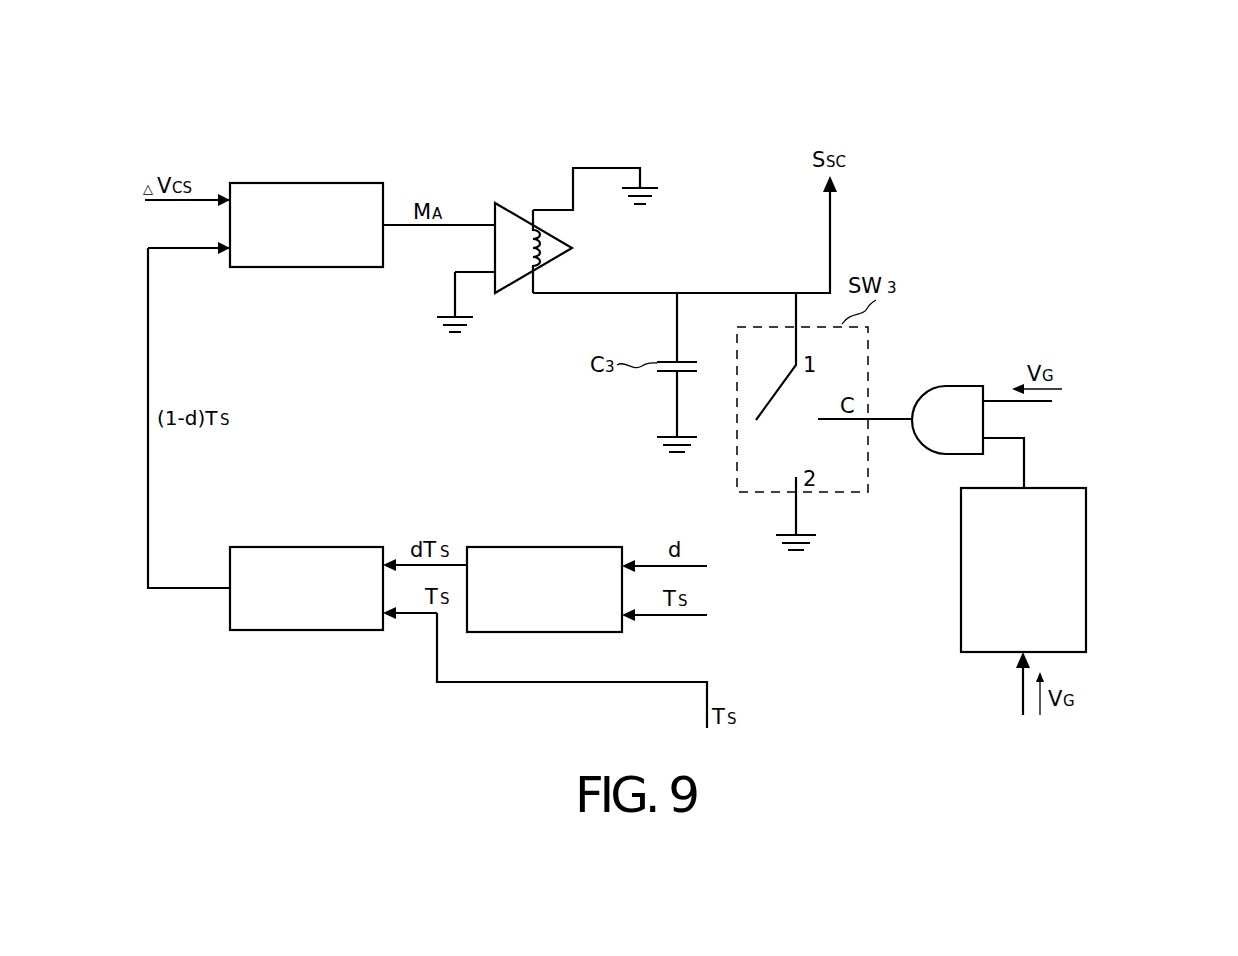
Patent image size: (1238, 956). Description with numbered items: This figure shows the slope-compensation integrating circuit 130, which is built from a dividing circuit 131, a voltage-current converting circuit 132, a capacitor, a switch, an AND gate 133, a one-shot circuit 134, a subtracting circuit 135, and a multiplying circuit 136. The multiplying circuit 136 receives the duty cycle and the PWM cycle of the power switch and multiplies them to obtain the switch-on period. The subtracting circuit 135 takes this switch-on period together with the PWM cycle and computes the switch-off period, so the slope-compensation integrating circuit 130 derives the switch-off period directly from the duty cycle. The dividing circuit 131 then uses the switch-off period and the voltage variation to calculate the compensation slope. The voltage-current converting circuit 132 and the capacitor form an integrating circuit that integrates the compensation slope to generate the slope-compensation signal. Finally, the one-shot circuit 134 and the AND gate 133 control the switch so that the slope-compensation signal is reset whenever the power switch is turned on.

The slope-compensation integrating circuit 130 is at (1095, 150).
The dividing circuit 131 is at (305, 183).
The voltage-current converting circuit 132 is at (515, 214).
The AND gate 133 is at (958, 386).
The one-shot circuit 134 is at (1086, 596).
The subtracting circuit 135 is at (305, 547).
The multiplying circuit 136 is at (545, 547).